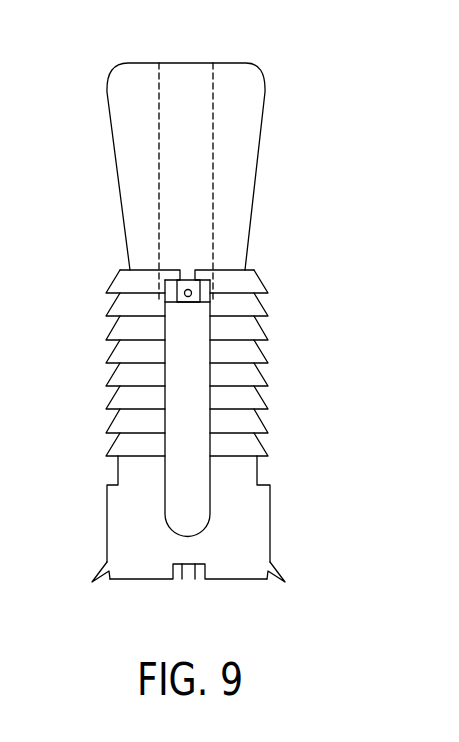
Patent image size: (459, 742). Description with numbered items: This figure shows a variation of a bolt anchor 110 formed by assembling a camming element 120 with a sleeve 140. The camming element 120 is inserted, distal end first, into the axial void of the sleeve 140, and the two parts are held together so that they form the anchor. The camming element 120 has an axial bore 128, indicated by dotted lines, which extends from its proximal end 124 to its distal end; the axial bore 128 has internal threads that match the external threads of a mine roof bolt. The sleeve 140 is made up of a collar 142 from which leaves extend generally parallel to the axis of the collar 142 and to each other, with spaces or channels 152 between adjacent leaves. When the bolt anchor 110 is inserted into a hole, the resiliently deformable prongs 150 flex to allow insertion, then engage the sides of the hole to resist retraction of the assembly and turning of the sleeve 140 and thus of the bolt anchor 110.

The bolt anchor 110 is at (343, 215).
The camming element 120 is at (267, 214).
The proximal end 124 is at (260, 70).
The axial bore 128 is at (213, 62).
The sleeve 140 is at (280, 334).
The collar 142 is at (107, 521).
The resiliently deformable prongs 150 is at (190, 580).
The channels 152 is at (183, 444).